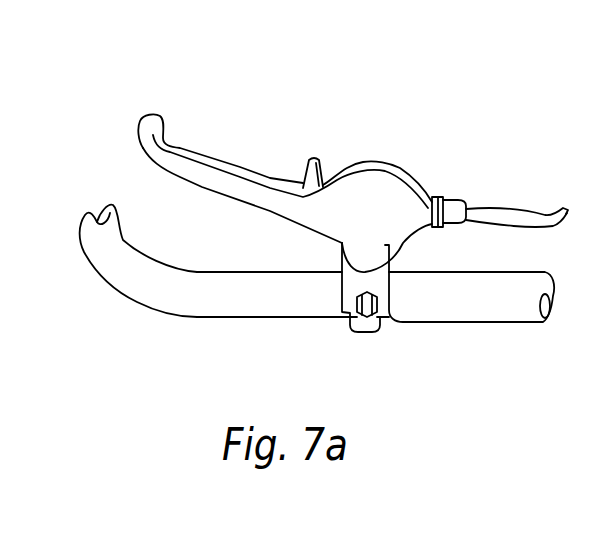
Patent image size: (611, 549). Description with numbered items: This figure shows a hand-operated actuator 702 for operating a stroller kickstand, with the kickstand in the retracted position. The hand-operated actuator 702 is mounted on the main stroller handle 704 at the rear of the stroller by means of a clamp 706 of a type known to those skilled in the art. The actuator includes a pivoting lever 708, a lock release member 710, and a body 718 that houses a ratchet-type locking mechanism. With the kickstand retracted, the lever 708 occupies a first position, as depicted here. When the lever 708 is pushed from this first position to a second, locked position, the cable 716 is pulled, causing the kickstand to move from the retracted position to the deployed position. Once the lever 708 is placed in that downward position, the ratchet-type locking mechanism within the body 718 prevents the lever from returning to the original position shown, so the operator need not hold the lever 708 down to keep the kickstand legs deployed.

The hand-operated actuator 702 is at (447, 129).
The main stroller handle 704 is at (488, 312).
The clamp 706 is at (380, 332).
The pivoting lever 708 is at (233, 163).
The lock release member 710 is at (313, 158).
The cable 716 is at (517, 218).
The body 718 is at (373, 210).